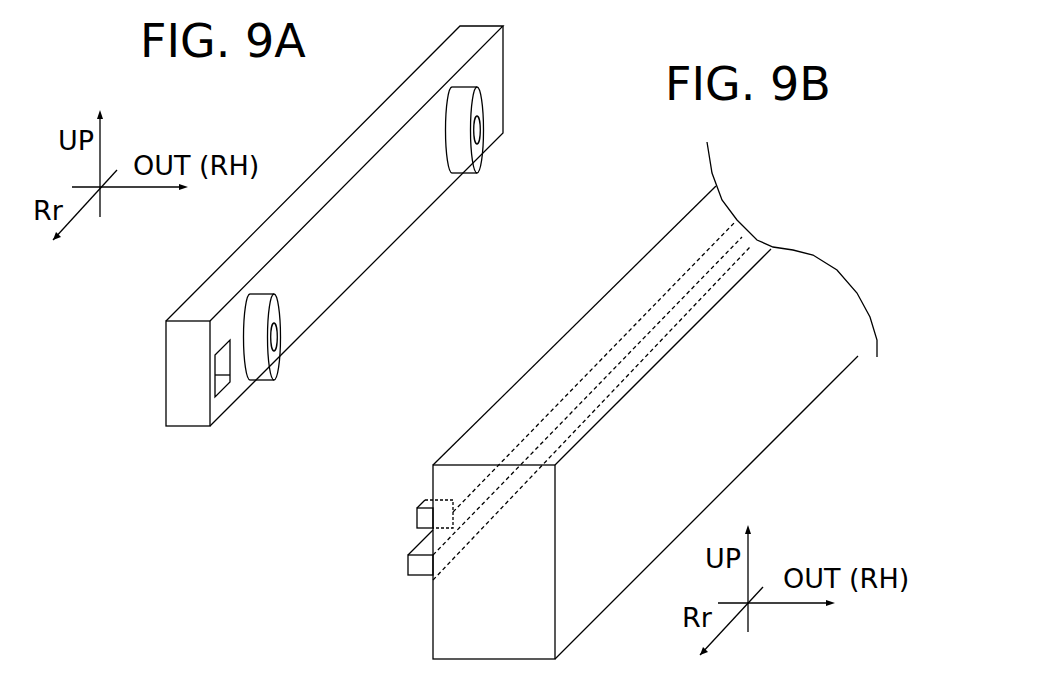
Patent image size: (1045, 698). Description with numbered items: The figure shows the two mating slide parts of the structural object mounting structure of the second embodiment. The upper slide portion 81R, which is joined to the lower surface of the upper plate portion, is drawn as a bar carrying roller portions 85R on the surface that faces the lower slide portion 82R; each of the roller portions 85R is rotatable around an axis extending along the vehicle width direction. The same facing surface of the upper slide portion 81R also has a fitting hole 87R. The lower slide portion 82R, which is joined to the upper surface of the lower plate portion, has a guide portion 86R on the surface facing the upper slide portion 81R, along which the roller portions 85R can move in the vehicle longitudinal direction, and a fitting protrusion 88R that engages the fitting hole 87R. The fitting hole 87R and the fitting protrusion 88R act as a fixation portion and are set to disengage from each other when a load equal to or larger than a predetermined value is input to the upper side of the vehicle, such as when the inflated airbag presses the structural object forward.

In FIG. 9A, the upper slide portion 81R is at (158, 384).
In FIG. 9A, the roller portions 85R is at (450, 162).
In FIG. 9A, the fitting hole 87R is at (216, 378).
In FIG. 9B, the lower slide portion 82R is at (420, 602).
In FIG. 9B, the guide portion 86R is at (408, 565).
In FIG. 9B, the fitting protrusion 88R is at (417, 517).